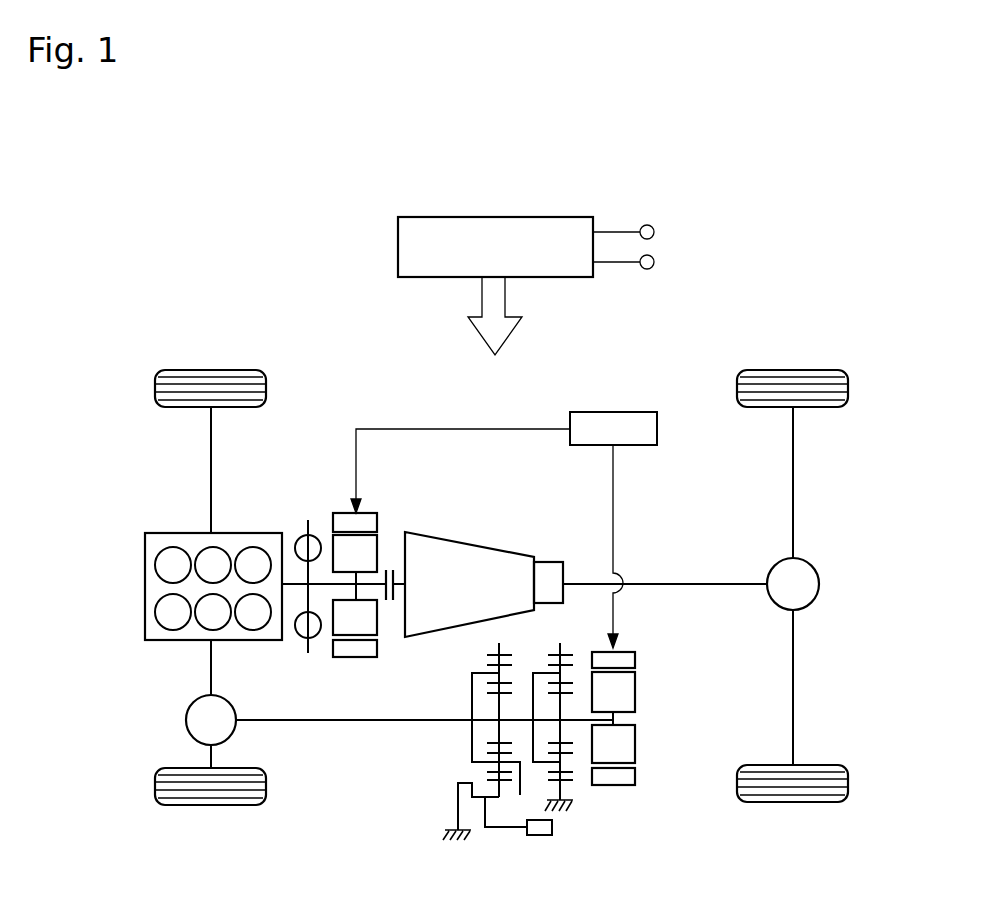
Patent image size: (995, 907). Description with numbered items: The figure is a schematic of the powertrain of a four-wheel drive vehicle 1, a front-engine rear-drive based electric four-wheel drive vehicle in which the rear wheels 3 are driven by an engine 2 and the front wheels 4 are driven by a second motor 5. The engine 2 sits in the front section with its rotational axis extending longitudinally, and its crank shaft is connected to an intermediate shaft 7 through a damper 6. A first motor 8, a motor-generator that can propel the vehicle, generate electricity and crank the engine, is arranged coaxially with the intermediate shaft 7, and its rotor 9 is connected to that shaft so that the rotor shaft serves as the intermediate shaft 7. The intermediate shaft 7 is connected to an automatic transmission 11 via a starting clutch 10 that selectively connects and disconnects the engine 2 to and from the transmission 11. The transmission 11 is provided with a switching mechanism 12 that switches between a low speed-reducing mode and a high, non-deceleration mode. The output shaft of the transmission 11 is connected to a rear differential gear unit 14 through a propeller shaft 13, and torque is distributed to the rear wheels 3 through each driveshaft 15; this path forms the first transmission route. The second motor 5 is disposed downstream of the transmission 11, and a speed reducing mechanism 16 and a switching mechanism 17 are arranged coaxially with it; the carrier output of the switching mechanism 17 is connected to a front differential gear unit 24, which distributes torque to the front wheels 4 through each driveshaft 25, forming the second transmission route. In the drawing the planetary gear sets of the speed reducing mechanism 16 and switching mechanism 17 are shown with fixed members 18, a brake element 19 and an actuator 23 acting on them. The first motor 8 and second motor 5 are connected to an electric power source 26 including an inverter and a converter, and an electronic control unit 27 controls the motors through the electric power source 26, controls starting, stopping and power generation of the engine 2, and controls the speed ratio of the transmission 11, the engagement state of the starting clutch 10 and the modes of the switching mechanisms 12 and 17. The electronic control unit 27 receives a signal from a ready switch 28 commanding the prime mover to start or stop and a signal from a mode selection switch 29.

The vehicle 1 is at (300, 301).
The engine 2 is at (160, 532).
The rear wheels 3 is at (791, 369).
The front wheels 4 is at (222, 369).
The second motor 5 is at (637, 693).
The damper 6 is at (298, 545).
The intermediate shaft 7 is at (330, 588).
The first motor 8 is at (372, 512).
The rotor 9 is at (377, 625).
The starting clutch 10 is at (388, 572).
The automatic transmission 11 is at (468, 542).
The switching mechanism 12 is at (547, 562).
The propeller shaft 13 is at (717, 580).
The rear differential gear unit 14 is at (819, 583).
The driveshaft 15 is at (795, 501).
The speed reducing mechanism 16 is at (576, 784).
The switching mechanism 17 is at (485, 730).
The fixed members (ground) 18 is at (457, 843).
The brake 19 is at (499, 808).
The actuator 23 is at (537, 836).
The front differential gear unit 24 is at (185, 723).
The driveshaft 25 is at (209, 453).
The electric power source 26 is at (657, 431).
The electronic control unit 27 is at (495, 215).
The ready switch 28 is at (647, 270).
The mode selection switch 29 is at (647, 225).